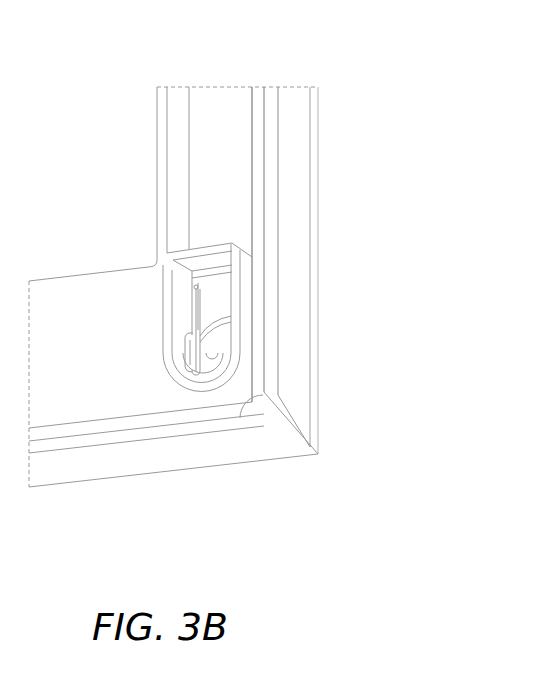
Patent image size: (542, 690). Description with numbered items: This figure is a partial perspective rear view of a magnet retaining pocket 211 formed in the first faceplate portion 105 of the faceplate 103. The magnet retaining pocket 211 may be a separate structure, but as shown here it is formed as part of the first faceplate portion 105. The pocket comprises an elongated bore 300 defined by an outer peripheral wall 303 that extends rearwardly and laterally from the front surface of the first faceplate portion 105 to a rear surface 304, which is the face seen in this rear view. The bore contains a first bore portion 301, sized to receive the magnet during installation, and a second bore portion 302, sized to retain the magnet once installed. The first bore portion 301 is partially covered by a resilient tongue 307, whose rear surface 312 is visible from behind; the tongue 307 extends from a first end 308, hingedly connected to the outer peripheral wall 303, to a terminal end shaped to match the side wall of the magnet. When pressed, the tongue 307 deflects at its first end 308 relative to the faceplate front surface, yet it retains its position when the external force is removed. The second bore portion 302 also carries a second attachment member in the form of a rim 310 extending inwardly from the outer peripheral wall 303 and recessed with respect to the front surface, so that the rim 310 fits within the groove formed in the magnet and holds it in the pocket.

The faceplate 103 is at (298, 120).
The first faceplate portion 105 is at (222, 107).
The magnet retaining pocket 211 is at (213, 357).
The elongated bore 300 is at (206, 357).
The first bore portion 301 is at (217, 298).
The second bore portion 302 is at (222, 344).
The outer peripheral wall 303 is at (170, 362).
The rear surface 304 is at (167, 322).
The resilient tongue 307 is at (207, 318).
The first end 308 is at (213, 272).
The rim 310 is at (195, 368).
The rear surface 312 is at (205, 297).